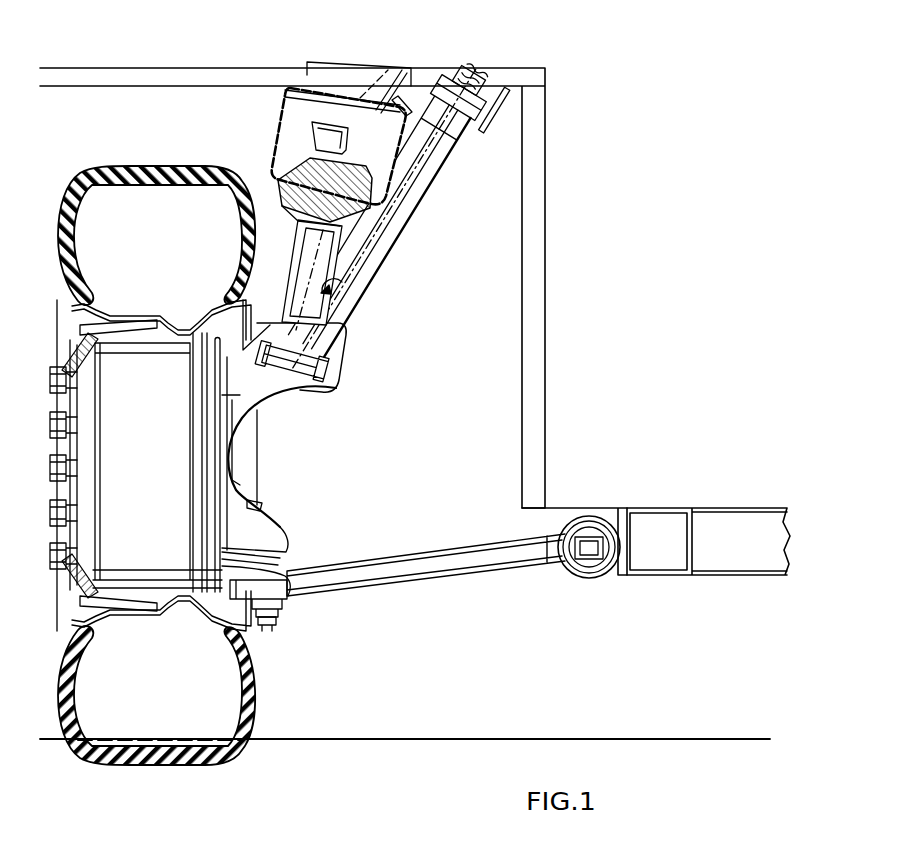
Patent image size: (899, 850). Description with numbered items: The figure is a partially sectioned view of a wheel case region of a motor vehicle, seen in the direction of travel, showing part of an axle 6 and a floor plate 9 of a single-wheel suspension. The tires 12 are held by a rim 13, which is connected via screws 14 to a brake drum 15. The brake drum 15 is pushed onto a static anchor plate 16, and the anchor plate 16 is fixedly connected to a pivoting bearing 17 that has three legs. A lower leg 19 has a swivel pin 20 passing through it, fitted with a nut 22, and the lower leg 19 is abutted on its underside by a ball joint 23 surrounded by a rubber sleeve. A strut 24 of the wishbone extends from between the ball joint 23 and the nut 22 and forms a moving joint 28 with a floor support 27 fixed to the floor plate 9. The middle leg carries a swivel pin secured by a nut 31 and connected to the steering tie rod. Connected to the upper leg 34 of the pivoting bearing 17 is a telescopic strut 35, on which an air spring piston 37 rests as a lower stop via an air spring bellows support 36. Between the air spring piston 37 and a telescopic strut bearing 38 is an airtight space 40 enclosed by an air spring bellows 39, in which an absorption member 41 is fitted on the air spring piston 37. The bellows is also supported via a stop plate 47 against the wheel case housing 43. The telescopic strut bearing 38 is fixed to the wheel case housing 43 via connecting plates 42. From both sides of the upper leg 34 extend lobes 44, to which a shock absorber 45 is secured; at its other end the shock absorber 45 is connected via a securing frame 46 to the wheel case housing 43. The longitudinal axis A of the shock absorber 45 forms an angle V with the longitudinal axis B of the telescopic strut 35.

The axle 6 is at (377, 652).
The floor plate 9 is at (618, 507).
The tires 12 is at (67, 253).
The rim 13 is at (76, 355).
The screws 14 is at (50, 466).
The brake drum 15 is at (110, 476).
The anchor plate 16 is at (217, 424).
The pivoting bearing 17 is at (234, 481).
The lower leg 19 is at (270, 538).
The swivel pin 20 is at (264, 612).
The nut 22 is at (274, 601).
The ball joint 23 is at (278, 556).
The strut 24 is at (396, 576).
The floor support 27 is at (660, 576).
The moving joint 28 is at (577, 581).
The nut 31 is at (266, 501).
The upper leg 34 is at (340, 344).
The telescopic strut 35 is at (300, 290).
The air spring bellows support 36 is at (288, 229).
The air spring piston 37 is at (352, 206).
The telescopic strut bearing 38 is at (333, 63).
The air spring bellows 39 is at (398, 162).
The airtight space 40 is at (302, 112).
The absorption member 41 is at (327, 137).
The connecting plates 42 is at (408, 80).
The wheel case housing 43 is at (517, 66).
The lobes 44 is at (310, 368).
The shock absorber 45 is at (380, 262).
The securing frame 46 is at (494, 113).
The stop plate 47 is at (364, 97).
The longitudinal axis of the shock absorber A is at (372, 284).
The longitudinal axis of the telescopic strut B is at (300, 248).
The angle V is at (340, 300).